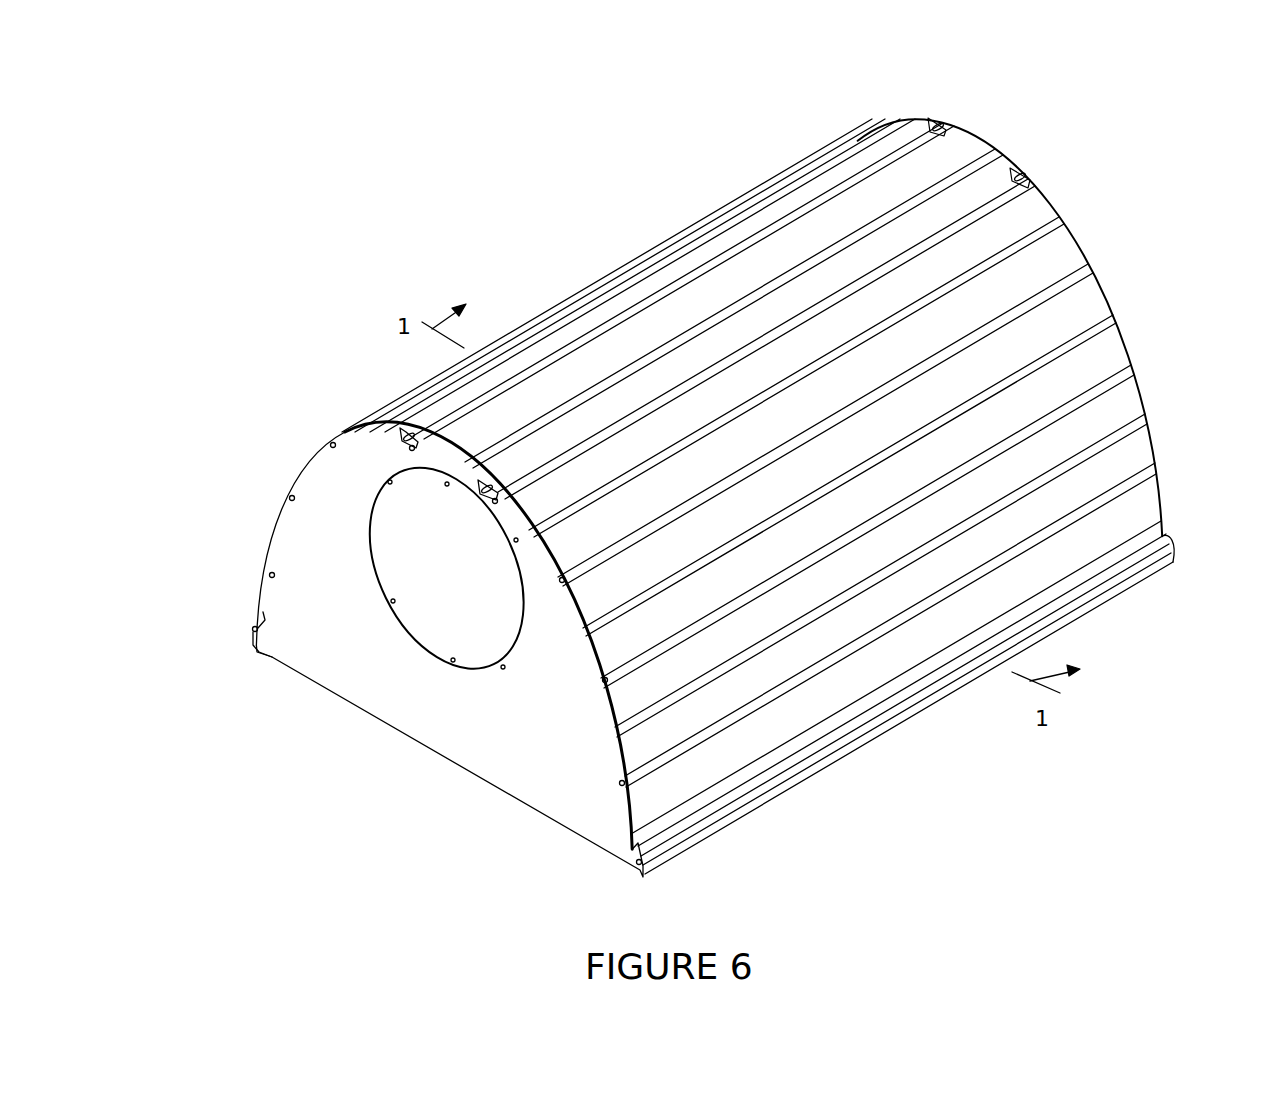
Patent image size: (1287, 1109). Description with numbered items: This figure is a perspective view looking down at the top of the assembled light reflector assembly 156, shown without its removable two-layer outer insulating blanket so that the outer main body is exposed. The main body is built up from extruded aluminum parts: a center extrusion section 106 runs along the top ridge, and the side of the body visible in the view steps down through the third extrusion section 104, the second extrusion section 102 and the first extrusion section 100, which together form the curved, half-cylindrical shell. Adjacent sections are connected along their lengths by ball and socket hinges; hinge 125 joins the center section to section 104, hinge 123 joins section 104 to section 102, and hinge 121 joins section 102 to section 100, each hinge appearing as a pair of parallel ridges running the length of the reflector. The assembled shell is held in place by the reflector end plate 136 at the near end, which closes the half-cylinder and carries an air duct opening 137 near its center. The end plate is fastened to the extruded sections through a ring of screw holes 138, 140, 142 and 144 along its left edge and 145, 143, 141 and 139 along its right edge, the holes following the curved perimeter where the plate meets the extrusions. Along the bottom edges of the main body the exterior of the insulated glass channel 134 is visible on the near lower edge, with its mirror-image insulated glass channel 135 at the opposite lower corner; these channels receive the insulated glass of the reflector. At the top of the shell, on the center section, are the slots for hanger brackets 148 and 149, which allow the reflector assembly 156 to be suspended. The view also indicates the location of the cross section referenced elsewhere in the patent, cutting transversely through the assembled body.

The extrusion section 1 100 is at (1145, 510).
The extrusion section 2 102 is at (1130, 400).
The extrusion section 3 104 is at (1095, 300).
The center extrusion section 106 is at (985, 185).
The ball and socket hinge 121 is at (1143, 430).
The ball and socket hinge 123 is at (1118, 322).
The ball and socket hinge 125 is at (1078, 258).
The insulated glass channel 134 is at (652, 862).
The insulated glass channel mirror 135 is at (252, 641).
The reflector end plate 136 is at (402, 692).
The air duct opening 137 is at (453, 662).
The screw hole 138 is at (253, 628).
The screw hole 139 is at (636, 865).
The screw hole 140 is at (270, 575).
The screw hole 141 is at (619, 783).
The screw hole 142 is at (290, 498).
The screw hole 143 is at (603, 682).
The screw hole 144 is at (330, 445).
The screw hole 145 is at (562, 583).
The slot for hangar bracket 148 is at (1027, 178).
The slot for hangar bracket 149 is at (943, 122).
The reflector assembly 156 is at (567, 195).